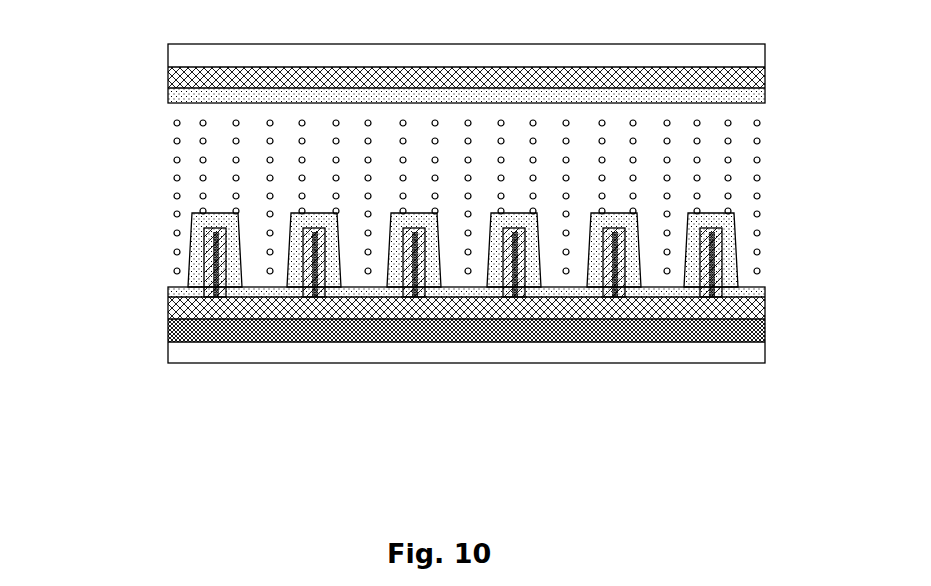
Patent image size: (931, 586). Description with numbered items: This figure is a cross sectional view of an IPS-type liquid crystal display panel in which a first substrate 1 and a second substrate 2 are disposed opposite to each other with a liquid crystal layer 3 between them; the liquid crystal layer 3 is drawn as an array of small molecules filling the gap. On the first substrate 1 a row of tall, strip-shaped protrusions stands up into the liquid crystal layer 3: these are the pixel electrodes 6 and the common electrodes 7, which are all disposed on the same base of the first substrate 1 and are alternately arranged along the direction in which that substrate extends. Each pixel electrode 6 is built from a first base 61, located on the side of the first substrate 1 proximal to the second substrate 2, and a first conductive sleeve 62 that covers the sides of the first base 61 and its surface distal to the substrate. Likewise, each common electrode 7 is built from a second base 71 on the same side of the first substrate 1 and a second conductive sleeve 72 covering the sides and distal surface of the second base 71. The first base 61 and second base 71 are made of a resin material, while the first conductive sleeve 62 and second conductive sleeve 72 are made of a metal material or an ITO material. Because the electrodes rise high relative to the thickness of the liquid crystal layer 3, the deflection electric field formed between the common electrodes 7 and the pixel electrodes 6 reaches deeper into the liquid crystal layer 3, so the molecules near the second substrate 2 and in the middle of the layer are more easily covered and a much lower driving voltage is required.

The first substrate 1 is at (138, 319).
The second substrate 2 is at (138, 77).
The liquid crystal layer 3 is at (733, 198).
The pixel electrode 6 is at (422, 328).
The first base 61 is at (413, 285).
The first conductive sleeve 62 is at (425, 286).
The common electrode 7 is at (323, 328).
The second base 71 is at (315, 285).
The second conductive sleeve 72 is at (326, 286).